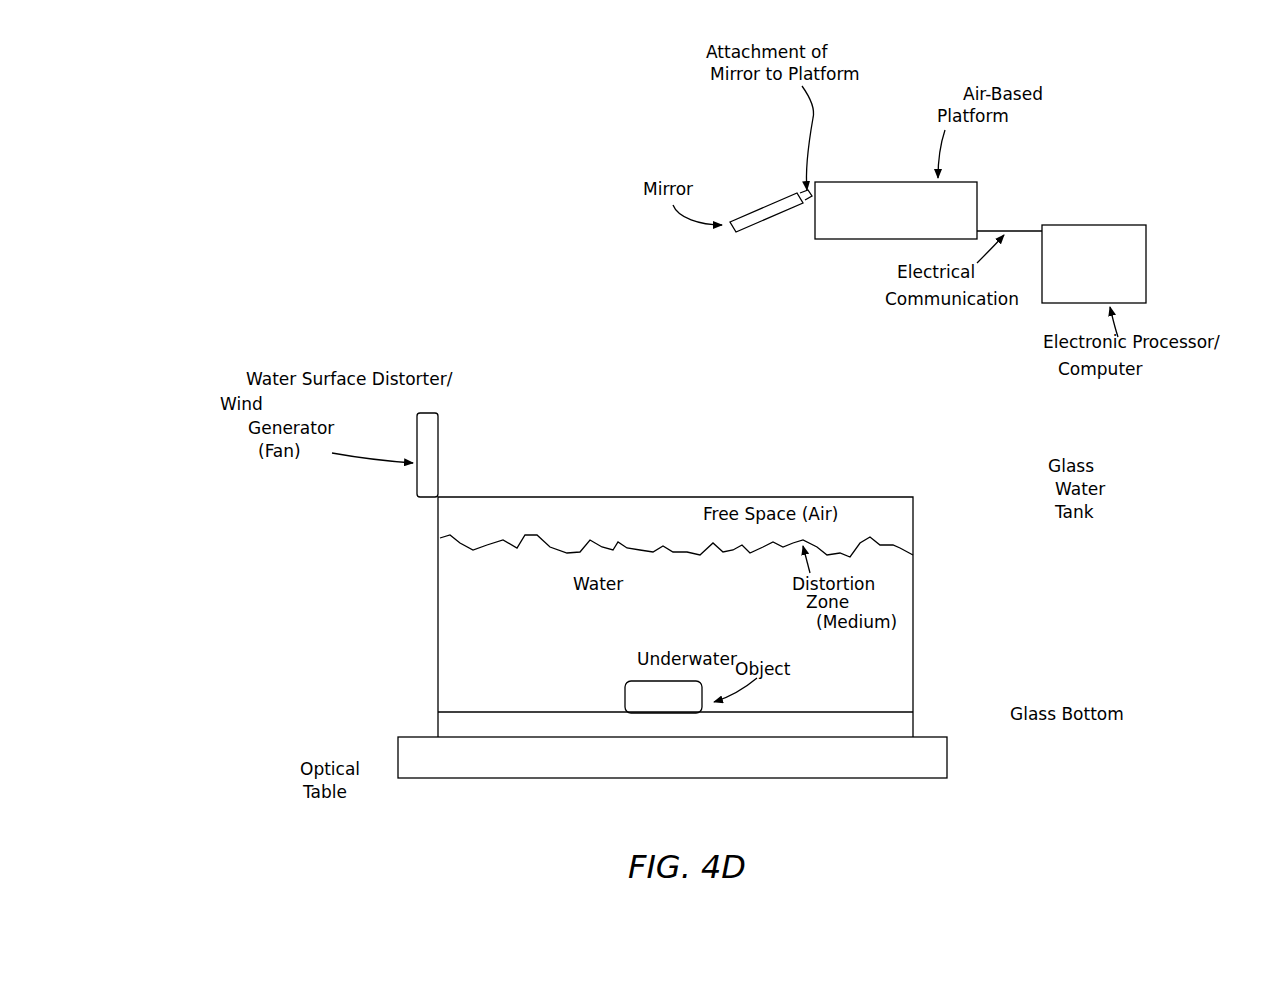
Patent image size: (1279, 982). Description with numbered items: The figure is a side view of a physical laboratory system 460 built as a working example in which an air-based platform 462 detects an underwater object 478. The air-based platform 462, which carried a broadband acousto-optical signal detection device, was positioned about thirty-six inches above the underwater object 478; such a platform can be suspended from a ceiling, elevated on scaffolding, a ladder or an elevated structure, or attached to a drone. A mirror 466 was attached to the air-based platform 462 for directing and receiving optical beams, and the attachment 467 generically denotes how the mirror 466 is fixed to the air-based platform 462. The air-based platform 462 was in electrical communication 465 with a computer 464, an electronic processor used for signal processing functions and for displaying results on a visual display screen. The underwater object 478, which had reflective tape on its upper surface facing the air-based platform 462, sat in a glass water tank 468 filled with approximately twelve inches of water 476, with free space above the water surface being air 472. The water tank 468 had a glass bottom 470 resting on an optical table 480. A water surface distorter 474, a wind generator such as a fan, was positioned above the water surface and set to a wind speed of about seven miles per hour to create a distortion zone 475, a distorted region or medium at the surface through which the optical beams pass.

The laboratory system 460 is at (373, 259).
The air-based platform 462 is at (969, 182).
The computer 464 is at (1146, 225).
The electrical communication 465 is at (996, 231).
The mirror 466 is at (767, 203).
The attachment of the mirror to the air-based platform 467 is at (802, 193).
The glass water tank 468 is at (916, 528).
The glass bottom 470 is at (913, 725).
The air 472 is at (683, 535).
The water surface distorter 474 is at (417, 415).
The distortion zone 475 is at (750, 557).
The water 476 is at (693, 595).
The underwater object 478 is at (622, 703).
The optical table 480 is at (398, 756).